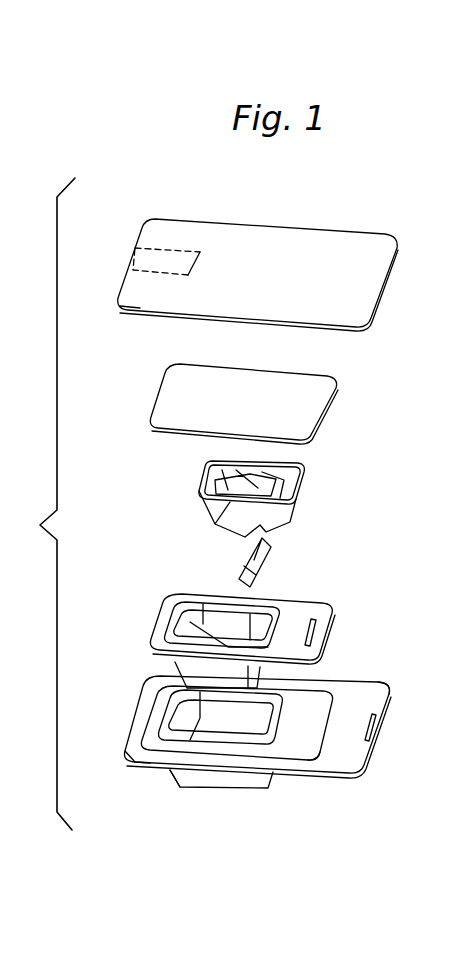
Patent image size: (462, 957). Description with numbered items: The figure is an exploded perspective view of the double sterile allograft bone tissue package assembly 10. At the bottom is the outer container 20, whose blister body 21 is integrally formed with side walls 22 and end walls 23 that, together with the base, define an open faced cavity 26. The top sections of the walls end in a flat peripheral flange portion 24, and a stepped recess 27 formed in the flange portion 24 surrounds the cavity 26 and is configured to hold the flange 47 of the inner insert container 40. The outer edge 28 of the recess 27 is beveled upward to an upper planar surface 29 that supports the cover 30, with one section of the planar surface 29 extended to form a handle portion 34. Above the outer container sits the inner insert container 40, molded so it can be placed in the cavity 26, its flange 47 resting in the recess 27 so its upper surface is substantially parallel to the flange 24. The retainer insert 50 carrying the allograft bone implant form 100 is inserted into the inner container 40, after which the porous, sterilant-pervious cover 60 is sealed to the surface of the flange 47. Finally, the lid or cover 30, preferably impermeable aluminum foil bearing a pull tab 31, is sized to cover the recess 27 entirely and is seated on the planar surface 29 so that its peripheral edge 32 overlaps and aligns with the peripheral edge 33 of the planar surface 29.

The allograft bone tissue package assembly 10 is at (44, 504).
The outer container 20 is at (264, 745).
The blister body 21 is at (136, 770).
The side walls 22 is at (212, 780).
The end walls 23 is at (170, 770).
The flange portion 24 is at (133, 740).
The open faced cavity 26 is at (203, 716).
The stepped recess 27 is at (292, 748).
The outer edge of recess 28 is at (320, 747).
The upper planar surface 29 is at (390, 700).
The cover 30 is at (272, 270).
The pull tab 31 is at (180, 248).
The peripheral edge of cover 32 is at (128, 313).
The peripheral edge of planar surface 33 is at (380, 748).
The handle portion 34 is at (357, 724).
The inner insert container 40 is at (264, 641).
The flange 47 is at (323, 612).
The retainer insert 50 is at (307, 520).
The cover 60 is at (338, 381).
The allograft bone implant form 100 is at (280, 566).